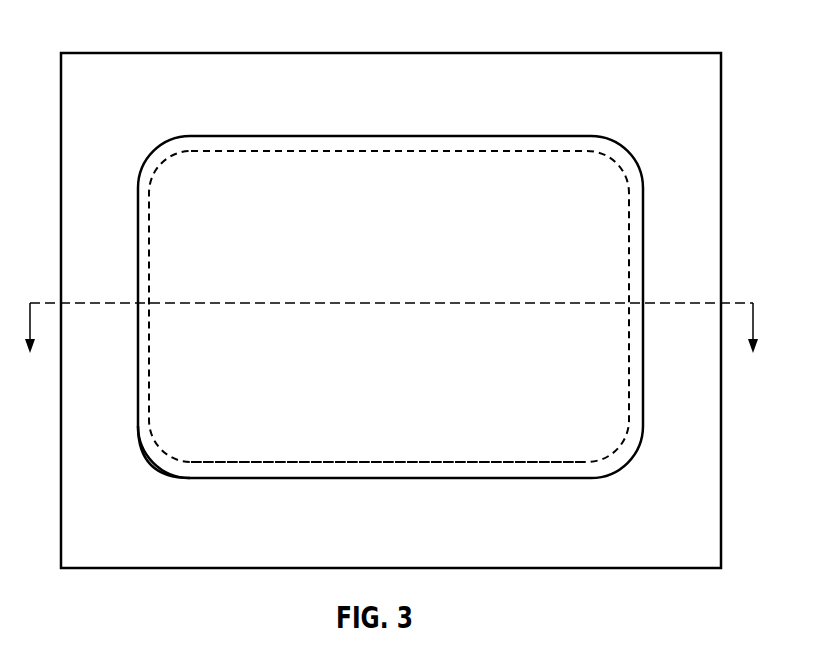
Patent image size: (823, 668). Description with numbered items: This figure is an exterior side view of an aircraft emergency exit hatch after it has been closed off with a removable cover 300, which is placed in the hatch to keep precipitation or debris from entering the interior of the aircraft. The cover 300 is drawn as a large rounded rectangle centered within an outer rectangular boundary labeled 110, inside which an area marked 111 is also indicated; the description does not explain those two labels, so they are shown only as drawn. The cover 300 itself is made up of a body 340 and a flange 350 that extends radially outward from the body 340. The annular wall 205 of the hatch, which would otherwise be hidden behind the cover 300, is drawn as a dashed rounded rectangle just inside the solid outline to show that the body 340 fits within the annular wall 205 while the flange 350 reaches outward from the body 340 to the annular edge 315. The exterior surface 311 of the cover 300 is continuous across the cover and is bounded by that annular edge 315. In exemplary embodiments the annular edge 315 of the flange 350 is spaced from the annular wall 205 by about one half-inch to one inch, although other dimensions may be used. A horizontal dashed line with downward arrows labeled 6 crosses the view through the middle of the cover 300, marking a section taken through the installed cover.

The substrate 110 is at (127, 53).
The substrate surface 111 is at (133, 114).
The removable cover 300 is at (411, 262).
The exterior surface 311 is at (409, 208).
The body 340 is at (409, 407).
The annular wall 205 is at (541, 461).
The annular edge 315 is at (205, 479).
The flange 350 is at (370, 468).
The section line 6- 6 is at (391, 344).